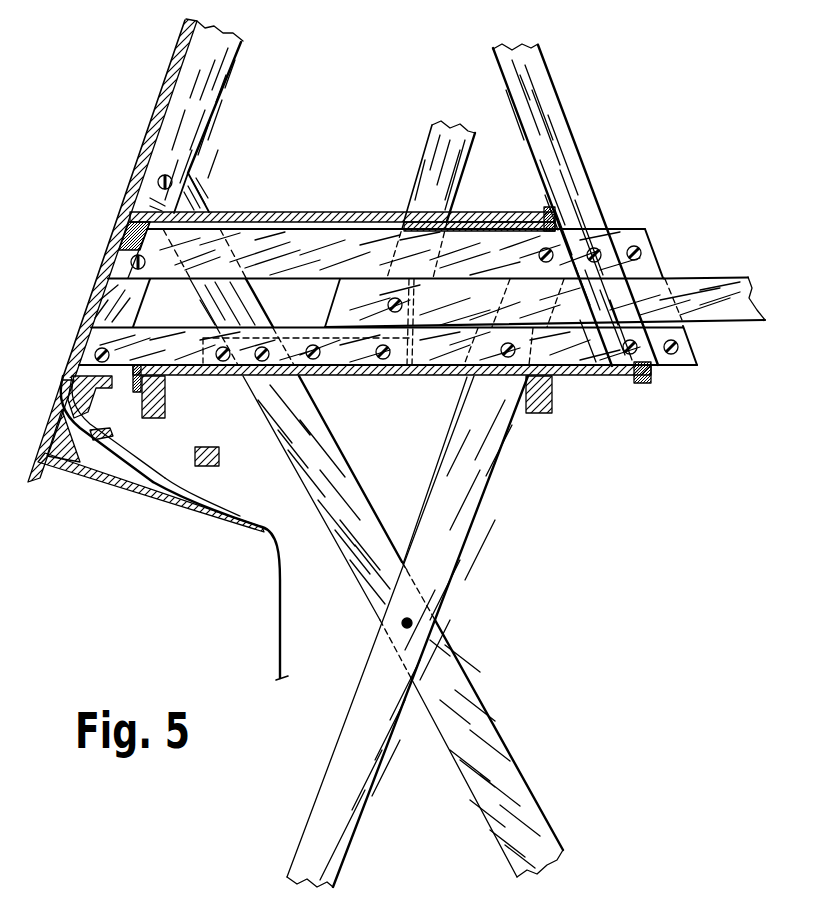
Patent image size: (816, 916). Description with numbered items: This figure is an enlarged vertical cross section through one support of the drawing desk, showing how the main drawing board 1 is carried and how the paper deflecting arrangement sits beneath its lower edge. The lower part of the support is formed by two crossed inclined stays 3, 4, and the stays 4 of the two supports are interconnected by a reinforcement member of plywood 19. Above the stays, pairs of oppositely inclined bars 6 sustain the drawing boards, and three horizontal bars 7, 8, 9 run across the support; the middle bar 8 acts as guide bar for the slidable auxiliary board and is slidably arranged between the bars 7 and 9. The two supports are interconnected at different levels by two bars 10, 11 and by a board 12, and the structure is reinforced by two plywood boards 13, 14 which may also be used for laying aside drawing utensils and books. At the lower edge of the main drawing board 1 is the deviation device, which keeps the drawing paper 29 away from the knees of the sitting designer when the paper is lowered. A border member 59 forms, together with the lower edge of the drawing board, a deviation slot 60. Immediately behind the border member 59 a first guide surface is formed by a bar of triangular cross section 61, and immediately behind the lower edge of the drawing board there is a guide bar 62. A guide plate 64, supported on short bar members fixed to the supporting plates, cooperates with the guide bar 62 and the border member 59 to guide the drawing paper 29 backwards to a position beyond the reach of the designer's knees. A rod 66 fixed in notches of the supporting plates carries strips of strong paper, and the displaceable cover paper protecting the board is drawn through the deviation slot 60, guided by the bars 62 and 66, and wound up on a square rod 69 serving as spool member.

The main drawing board 1 is at (88, 292).
The inclined stay 3 is at (190, 192).
The inclined stay 4 is at (353, 728).
The oppositely inclined bar 6 is at (570, 173).
The horizontal bar 7 is at (247, 247).
The horizontal bar 8 is at (670, 285).
The horizontal bar 9 is at (434, 353).
The bar 10 is at (167, 407).
The bar 11 is at (541, 410).
The board 12 is at (474, 211).
The plywood board 13 is at (310, 211).
The plywood board 14 is at (369, 368).
The reinforcement member of plywood 19 is at (445, 440).
The drawing paper 29 is at (115, 230).
The border member 59 is at (38, 482).
The deviation slot 60 is at (66, 397).
The bar of triangular cross section 61 is at (77, 461).
The guide bar 62 is at (90, 408).
The guide plate 64 is at (173, 500).
The rod 66 is at (113, 435).
The square rod 69 is at (219, 458).